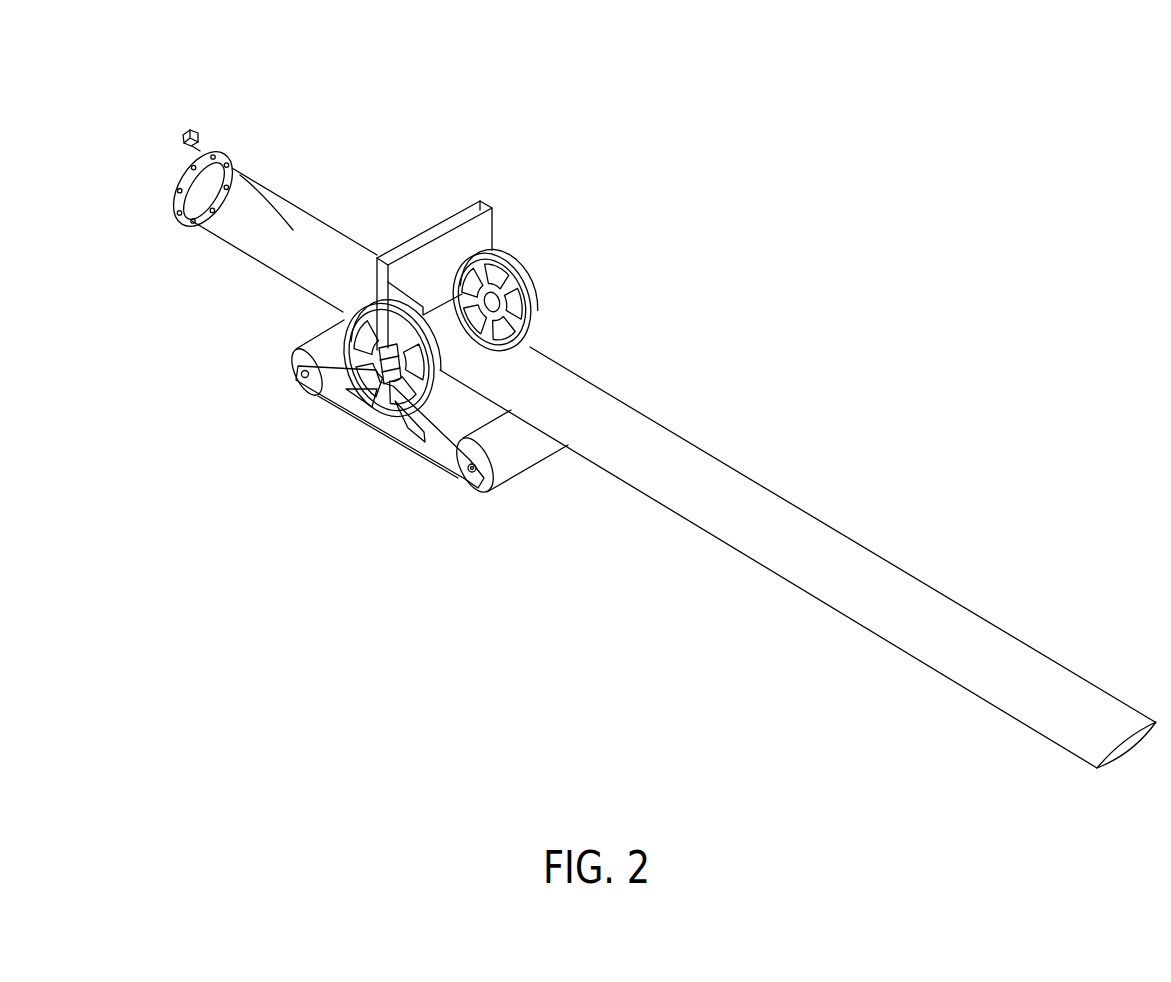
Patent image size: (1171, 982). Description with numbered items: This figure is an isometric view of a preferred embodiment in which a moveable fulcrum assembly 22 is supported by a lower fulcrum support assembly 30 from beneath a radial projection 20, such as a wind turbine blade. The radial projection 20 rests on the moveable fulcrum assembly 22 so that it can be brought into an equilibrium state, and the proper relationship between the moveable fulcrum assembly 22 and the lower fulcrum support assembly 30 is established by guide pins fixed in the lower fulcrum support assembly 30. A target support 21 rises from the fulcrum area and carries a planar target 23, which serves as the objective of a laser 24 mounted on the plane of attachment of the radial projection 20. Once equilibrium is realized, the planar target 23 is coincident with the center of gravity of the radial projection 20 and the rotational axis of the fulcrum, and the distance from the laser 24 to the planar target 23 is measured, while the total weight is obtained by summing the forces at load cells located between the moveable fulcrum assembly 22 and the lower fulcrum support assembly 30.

The radial projection 20 is at (940, 621).
The target support 21 is at (440, 226).
The moveable fulcrum assembly 22 is at (553, 299).
The planar target 23 is at (443, 255).
The laser 24 is at (200, 128).
The lower fulcrum support assembly 30 is at (398, 455).